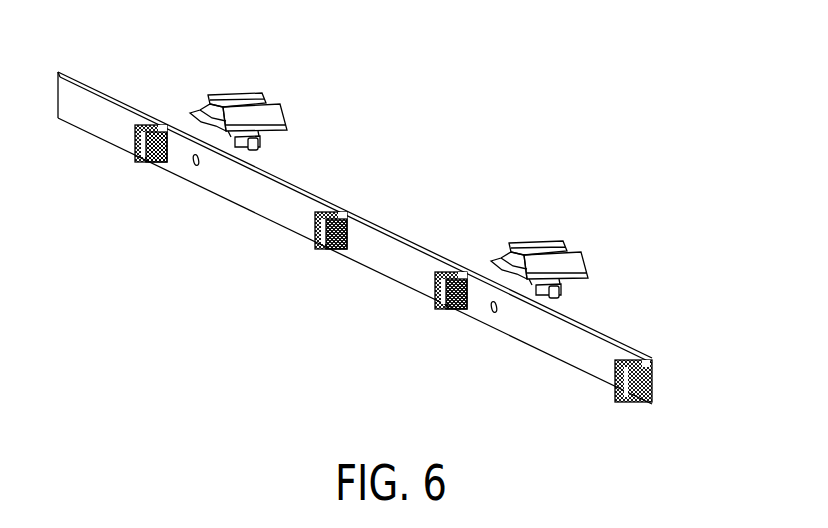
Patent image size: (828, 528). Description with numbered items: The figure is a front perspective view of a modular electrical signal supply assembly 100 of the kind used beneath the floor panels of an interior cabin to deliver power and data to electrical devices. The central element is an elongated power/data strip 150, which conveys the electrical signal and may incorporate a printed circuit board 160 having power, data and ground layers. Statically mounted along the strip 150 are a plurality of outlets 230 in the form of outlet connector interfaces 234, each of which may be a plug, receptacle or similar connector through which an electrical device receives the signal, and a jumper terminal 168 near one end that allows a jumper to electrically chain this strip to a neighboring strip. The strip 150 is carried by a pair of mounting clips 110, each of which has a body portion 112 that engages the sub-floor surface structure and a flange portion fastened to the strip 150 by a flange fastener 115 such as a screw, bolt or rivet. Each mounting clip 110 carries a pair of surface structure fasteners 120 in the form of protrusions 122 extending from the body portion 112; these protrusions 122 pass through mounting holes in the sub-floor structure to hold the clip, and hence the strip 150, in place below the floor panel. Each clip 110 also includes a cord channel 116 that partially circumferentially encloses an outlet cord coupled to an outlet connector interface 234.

The modular electrical signal supply assembly 100 is at (347, 71).
The mounting clip 110 is at (232, 90).
The body portion 112 is at (285, 124).
The flange fastener 115 is at (197, 166).
The cord channel 116 is at (250, 95).
The surface structure fastener 120 is at (268, 142).
The protrusion 122 is at (243, 141).
The power/data strip 150 is at (539, 359).
The printed circuit board 160 is at (586, 372).
The jumper terminal 168 is at (623, 403).
The outlet 230 is at (145, 164).
The outlet connector interface 234 is at (155, 163).